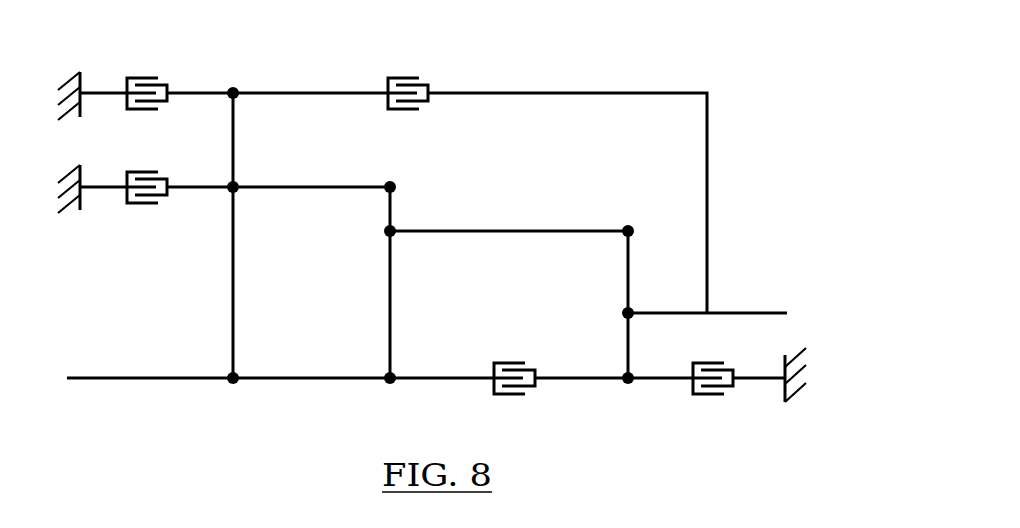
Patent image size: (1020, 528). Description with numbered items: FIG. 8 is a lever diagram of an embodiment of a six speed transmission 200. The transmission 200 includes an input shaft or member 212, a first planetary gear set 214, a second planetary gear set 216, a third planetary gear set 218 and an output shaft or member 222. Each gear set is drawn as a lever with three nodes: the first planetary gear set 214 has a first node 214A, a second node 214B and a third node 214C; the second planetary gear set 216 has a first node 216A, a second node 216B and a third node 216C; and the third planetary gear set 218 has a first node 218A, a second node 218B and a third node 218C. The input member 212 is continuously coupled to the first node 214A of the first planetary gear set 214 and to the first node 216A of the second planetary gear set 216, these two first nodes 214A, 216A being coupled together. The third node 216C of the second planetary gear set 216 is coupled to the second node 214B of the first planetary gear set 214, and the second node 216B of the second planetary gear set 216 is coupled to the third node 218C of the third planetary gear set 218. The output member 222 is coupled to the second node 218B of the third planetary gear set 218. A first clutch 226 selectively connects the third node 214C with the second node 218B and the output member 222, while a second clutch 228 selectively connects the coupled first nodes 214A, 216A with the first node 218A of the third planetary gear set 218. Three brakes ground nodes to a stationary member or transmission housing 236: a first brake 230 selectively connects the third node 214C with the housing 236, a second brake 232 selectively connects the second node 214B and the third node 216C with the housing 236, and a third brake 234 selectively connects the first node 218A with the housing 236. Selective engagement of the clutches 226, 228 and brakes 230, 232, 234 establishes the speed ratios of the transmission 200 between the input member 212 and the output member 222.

The six speed transmission 200 is at (723, 52).
The input shaft or member 212 is at (90, 380).
The first planetary gear set 214 is at (254, 360).
The first node of the first planetary gear set 214A is at (233, 386).
The second node of the first planetary gear set 214B is at (238, 191).
The third node of the first planetary gear set 214C is at (235, 86).
The second planetary gear set 216 is at (410, 360).
The first node of the second planetary gear set 216A is at (390, 386).
The second node of the second planetary gear set 216B is at (386, 230).
The third node of the second planetary gear set 216C is at (391, 181).
The third planetary gear set 218 is at (647, 360).
The first node of the third planetary gear set 218A is at (628, 386).
The second node of the third planetary gear set 218B is at (624, 312).
The third node of the third planetary gear set 218C is at (630, 225).
The output shaft or member 222 is at (758, 318).
The first clutch 226 is at (400, 77).
The second clutch 228 is at (500, 361).
The first brake 230 is at (138, 76).
The second brake 232 is at (140, 205).
The third brake 234 is at (720, 395).
The stationary member or transmission housing 236 is at (67, 75).